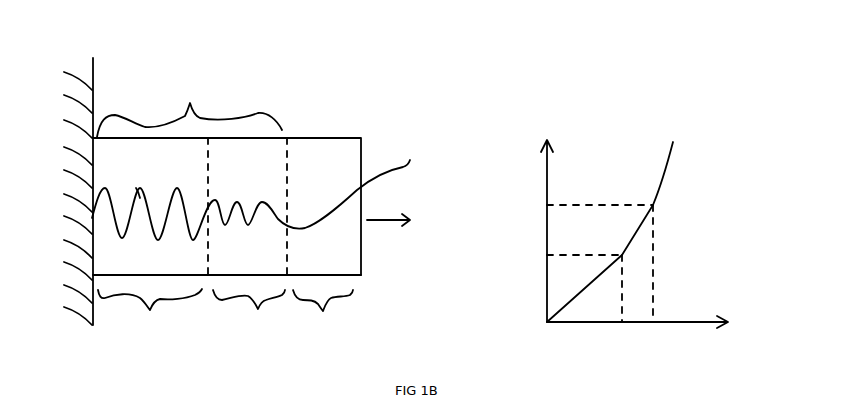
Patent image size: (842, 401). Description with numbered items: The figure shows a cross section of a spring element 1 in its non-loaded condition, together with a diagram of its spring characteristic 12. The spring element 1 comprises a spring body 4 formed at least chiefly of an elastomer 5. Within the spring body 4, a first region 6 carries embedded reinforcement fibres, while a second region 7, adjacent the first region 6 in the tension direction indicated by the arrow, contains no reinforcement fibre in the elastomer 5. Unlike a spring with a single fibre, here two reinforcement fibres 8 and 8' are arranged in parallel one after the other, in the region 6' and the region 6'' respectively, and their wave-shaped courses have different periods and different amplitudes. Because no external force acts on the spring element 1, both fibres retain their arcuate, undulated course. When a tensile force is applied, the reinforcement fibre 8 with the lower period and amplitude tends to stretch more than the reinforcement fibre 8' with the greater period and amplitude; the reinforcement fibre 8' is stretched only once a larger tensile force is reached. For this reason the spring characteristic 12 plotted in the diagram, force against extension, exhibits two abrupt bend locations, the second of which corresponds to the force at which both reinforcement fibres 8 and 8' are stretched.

The spring element 1 is at (155, 62).
The spring body 4 is at (337, 138).
The elastomer 5 is at (338, 253).
The first region 6 is at (189, 99).
The region 6' is at (249, 324).
The region 6'' is at (150, 324).
The second region 7 is at (323, 325).
The reinforcement fibre 8 is at (256, 186).
The reinforcement fibre 8' is at (128, 114).
The spring characteristic 12 is at (672, 160).